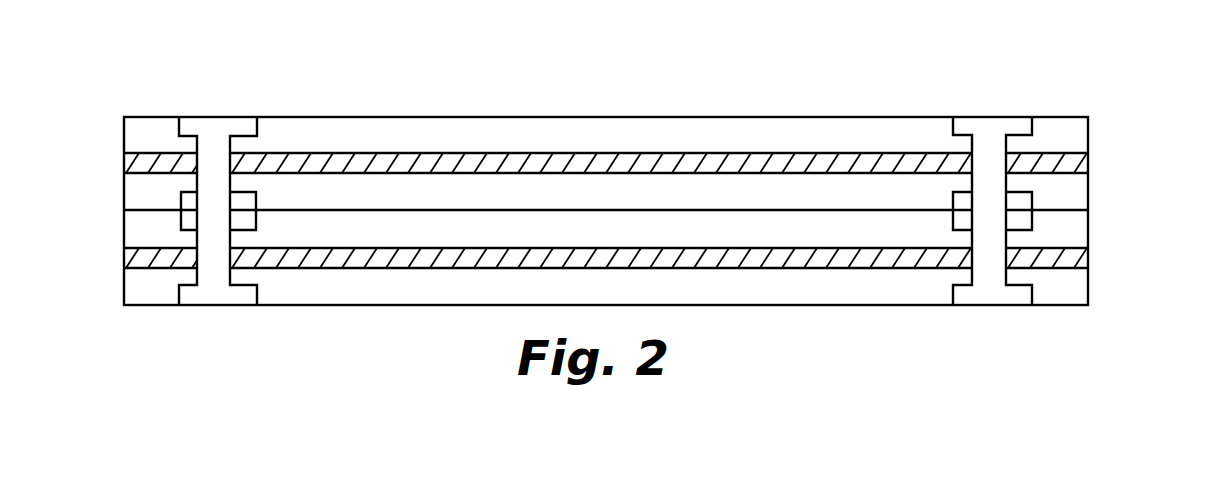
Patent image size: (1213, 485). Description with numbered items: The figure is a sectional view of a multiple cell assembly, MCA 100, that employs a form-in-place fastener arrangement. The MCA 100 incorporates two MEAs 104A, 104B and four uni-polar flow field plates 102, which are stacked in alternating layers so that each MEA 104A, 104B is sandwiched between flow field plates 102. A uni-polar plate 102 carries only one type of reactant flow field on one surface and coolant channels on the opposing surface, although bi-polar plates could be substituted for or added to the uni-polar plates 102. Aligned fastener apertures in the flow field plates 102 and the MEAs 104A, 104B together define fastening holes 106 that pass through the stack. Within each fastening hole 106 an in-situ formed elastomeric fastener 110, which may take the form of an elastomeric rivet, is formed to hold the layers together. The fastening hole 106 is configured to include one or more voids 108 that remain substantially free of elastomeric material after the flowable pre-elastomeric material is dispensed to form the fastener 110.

The MCA 100 is at (200, 46).
The uni-polar flow field plate 102 is at (878, 287).
The MEA 104A is at (1082, 165).
The MEA 104B is at (1082, 258).
The fastening hole 106 is at (212, 118).
The void 108 is at (252, 198).
The in-situ formed elastomeric fastener 110 is at (990, 123).